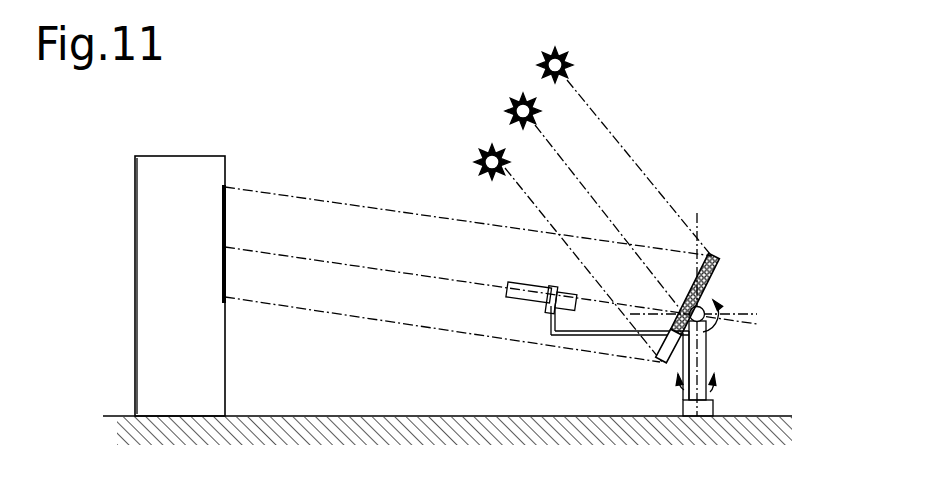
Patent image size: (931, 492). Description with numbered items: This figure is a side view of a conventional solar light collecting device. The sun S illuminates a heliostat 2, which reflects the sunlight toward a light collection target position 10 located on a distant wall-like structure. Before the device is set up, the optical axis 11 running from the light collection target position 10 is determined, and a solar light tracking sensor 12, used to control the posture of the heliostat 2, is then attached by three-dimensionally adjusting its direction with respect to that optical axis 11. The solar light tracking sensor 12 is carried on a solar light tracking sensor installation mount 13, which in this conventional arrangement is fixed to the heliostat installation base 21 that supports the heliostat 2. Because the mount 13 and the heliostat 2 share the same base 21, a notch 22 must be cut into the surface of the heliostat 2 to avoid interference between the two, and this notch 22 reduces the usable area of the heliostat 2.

The heliostat 2 is at (727, 252).
The light collection target position 10 is at (228, 232).
The optical axis 11 is at (371, 270).
The solar light tracking sensor 12 is at (540, 306).
The solar light tracking sensor installation mount 13 is at (606, 340).
The heliostat installation base 21 is at (704, 352).
The notch 22 is at (696, 343).
The sun S is at (552, 109).